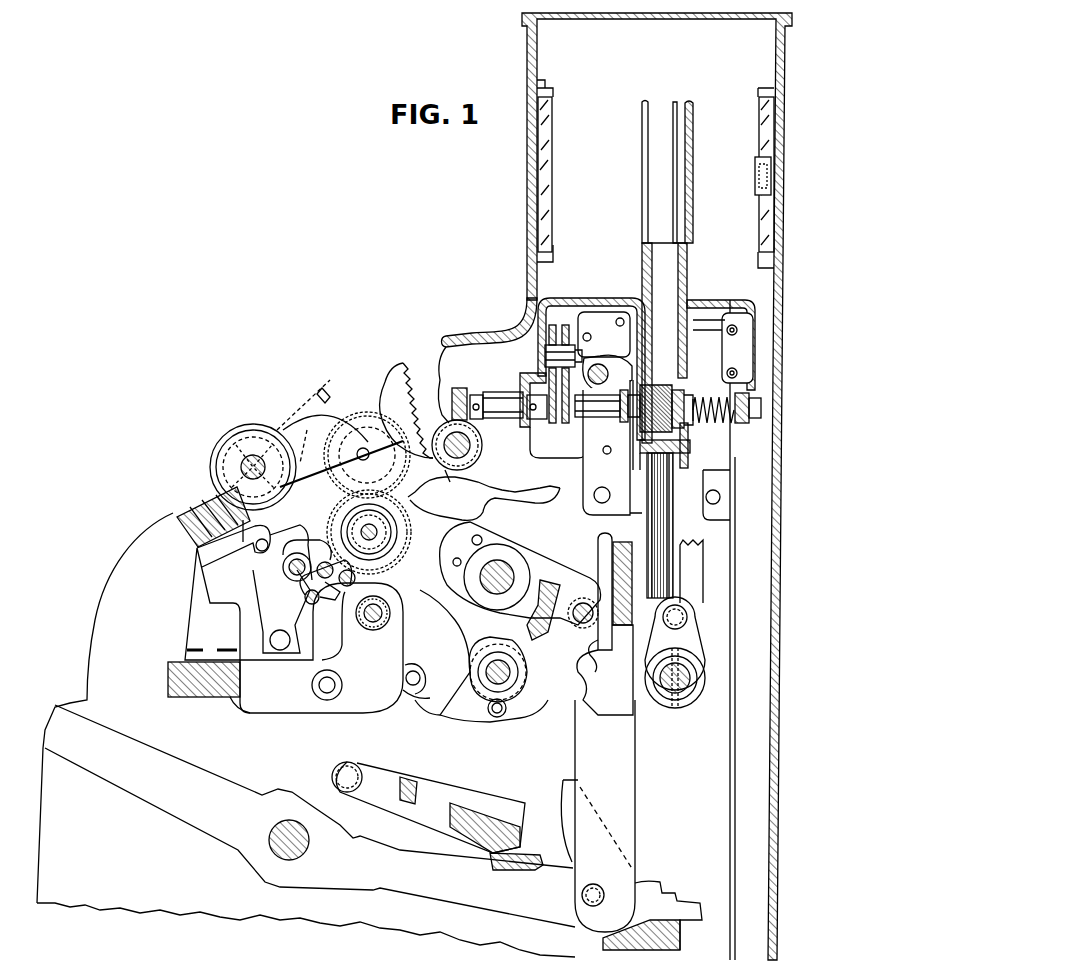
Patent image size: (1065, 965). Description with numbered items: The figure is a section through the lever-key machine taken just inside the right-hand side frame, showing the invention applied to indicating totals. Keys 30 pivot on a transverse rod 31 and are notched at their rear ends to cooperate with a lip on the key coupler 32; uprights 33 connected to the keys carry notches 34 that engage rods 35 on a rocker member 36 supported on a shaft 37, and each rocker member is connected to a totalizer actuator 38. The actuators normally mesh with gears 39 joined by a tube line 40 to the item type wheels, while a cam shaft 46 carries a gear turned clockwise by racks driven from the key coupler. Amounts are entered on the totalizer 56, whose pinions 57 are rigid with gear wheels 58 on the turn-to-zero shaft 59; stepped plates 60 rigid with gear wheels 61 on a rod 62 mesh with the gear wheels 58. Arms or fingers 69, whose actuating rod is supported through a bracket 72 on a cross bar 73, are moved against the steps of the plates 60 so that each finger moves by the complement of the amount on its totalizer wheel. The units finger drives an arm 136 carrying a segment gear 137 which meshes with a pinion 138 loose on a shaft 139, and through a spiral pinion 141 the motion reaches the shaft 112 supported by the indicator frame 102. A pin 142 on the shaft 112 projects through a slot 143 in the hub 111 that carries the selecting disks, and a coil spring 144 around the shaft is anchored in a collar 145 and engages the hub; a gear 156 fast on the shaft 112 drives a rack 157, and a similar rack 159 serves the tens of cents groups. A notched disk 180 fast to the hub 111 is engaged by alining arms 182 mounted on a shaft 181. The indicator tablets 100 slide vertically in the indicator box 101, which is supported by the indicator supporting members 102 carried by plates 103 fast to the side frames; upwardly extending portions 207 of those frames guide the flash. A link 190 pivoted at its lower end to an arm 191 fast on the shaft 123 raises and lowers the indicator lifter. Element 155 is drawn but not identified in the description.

The indicator tablet 100 is at (676, 103).
The upwardly extending portion 207 is at (693, 162).
The rack 157 is at (555, 330).
The rack 159 is at (580, 330).
The indicator supporting member 102 is at (700, 306).
The plate 103 is at (734, 312).
The shaft 181 is at (589, 355).
The alining arm 182 is at (598, 368).
The notched disk 180 is at (627, 380).
The indicator box 101 is at (688, 350).
The pin 142 is at (653, 388).
The collar 111 is at (687, 396).
The coil spring 144 is at (706, 424).
The collar 145 is at (741, 424).
The gear 156 is at (548, 425).
The shaft 112 is at (580, 435).
The plate 155 is at (622, 455).
The slot 143 is at (633, 452).
The spiral pinion 141 is at (460, 390).
The segment gear 137 is at (425, 362).
The arm 69 is at (318, 420).
The stepped plate 60 is at (330, 420).
The arm 136 is at (285, 430).
The rod 62 is at (360, 455).
The gear wheel 61 is at (340, 480).
The gear wheel 58 is at (388, 500).
The pinion 138 is at (468, 474).
The shaft 139 is at (452, 472).
The totalizer actuator 38 is at (540, 500).
The pinion 57 is at (382, 530).
The turn-to-zero shaft 59 is at (382, 547).
The shaft 37 is at (505, 570).
The rocker member 36 is at (540, 577).
The rod 35 is at (583, 603).
The totalizer 56 is at (300, 596).
The bracket 72 is at (200, 602).
The cross bar 73 is at (170, 677).
The gear 39 is at (380, 625).
The tube line 40 is at (358, 627).
The cam shaft 46 is at (512, 672).
The notch 34 is at (598, 670).
The link 190 is at (700, 565).
The arm 191 is at (695, 637).
The shaft 123 is at (685, 690).
The key 30 is at (220, 782).
The transverse rod 31 is at (305, 843).
The key coupler 32 is at (482, 815).
The upright 33 is at (625, 790).